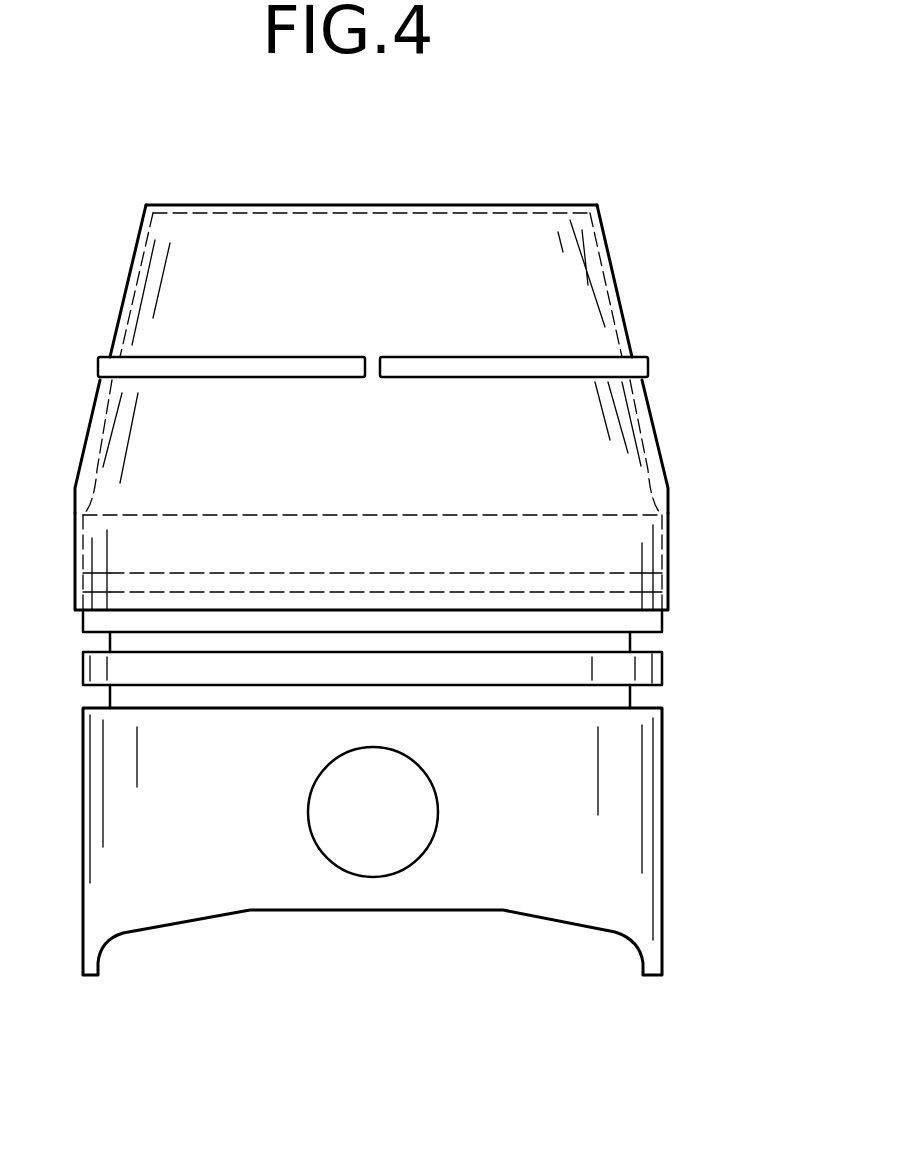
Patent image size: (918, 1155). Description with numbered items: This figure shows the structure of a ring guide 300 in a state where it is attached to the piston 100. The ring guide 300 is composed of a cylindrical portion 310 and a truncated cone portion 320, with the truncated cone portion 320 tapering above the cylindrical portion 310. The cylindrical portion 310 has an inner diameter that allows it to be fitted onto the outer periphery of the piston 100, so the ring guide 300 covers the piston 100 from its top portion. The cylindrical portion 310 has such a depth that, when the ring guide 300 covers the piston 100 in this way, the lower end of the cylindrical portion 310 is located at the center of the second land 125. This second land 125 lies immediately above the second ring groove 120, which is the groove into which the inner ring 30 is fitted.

The ring guide 300 is at (430, 364).
The truncated cone portion 320 is at (603, 237).
The cylindrical portion 310 is at (670, 535).
The inner ring 30 is at (633, 350).
The second land 125 is at (655, 618).
The second ring groove 120 is at (647, 640).
The piston 100 is at (637, 813).